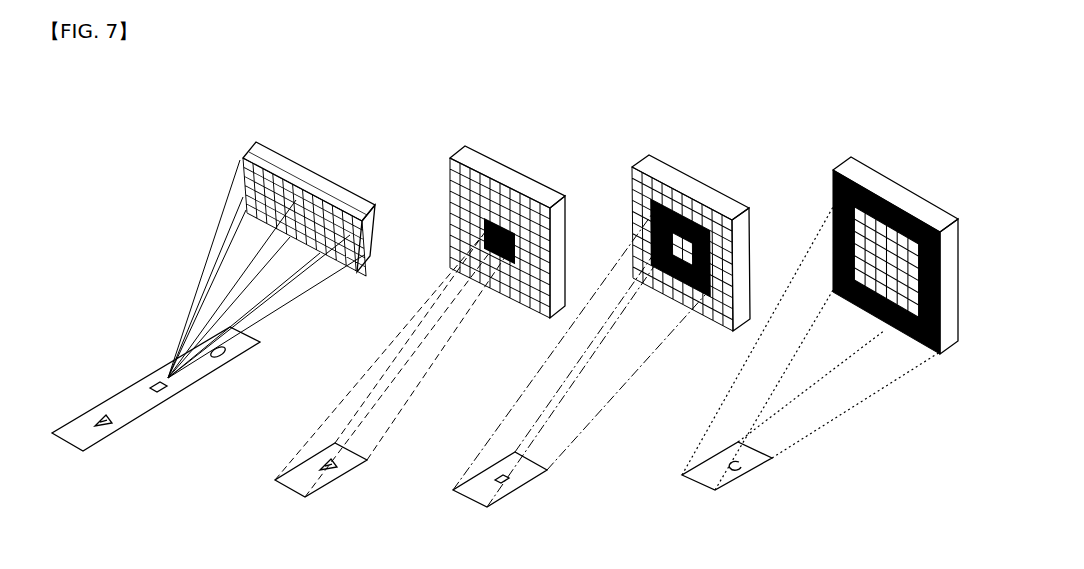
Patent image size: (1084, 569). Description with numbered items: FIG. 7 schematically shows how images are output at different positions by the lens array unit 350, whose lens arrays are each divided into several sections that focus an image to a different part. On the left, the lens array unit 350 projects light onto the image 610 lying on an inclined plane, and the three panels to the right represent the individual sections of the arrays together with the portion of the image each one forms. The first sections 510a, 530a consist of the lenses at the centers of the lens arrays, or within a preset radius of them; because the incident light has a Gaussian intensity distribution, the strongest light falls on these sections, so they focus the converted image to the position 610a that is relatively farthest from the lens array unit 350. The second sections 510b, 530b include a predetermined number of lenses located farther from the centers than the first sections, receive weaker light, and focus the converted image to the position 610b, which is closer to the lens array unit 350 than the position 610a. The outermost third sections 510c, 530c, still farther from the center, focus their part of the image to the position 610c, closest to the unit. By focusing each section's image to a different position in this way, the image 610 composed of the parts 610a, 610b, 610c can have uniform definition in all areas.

The lens array unit 350 is at (267, 160).
The image 610 is at (130, 408).
The first section of the lower lens array 510a is at (545, 204).
The first section of the upper lens array 530a is at (503, 227).
The farthest image position 610a is at (333, 475).
The second section of the lower lens array 510b is at (728, 203).
The second section of the upper lens array 530b is at (685, 220).
The second image position 610b is at (515, 485).
The third section of the lower lens array 510c is at (895, 228).
The third section of the upper lens array 530c is at (850, 182).
The third image position 610c is at (747, 473).